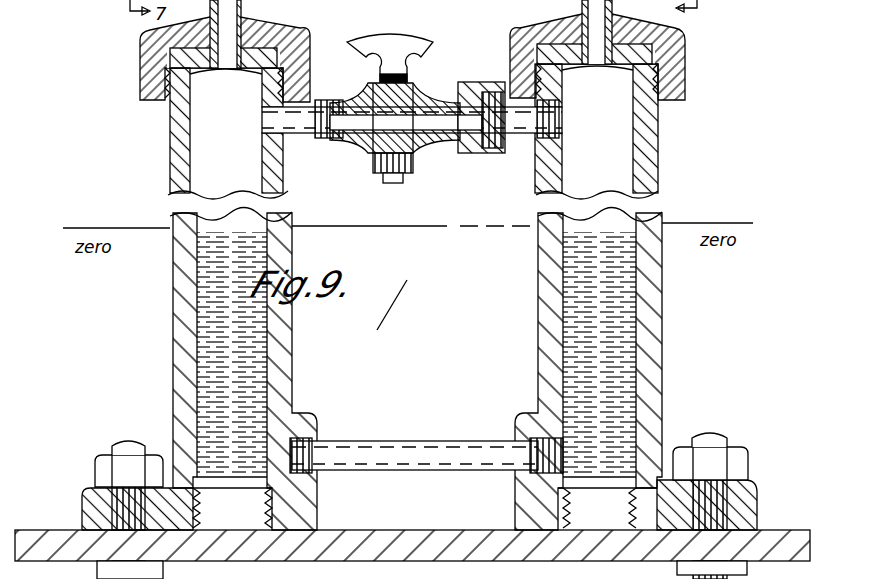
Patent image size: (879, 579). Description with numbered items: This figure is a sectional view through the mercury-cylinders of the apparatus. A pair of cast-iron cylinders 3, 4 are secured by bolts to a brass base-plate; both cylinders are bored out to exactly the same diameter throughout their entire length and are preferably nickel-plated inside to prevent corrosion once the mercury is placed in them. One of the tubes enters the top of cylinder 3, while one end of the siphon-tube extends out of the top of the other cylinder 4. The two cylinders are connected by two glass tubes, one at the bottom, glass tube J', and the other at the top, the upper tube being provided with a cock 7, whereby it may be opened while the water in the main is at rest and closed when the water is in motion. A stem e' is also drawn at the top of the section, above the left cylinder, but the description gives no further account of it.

The cast-iron cylinder 3 is at (199, 368).
The cast-iron cylinder 4 is at (636, 368).
The cock 7 is at (395, 108).
The stem e' is at (169, 34).
The glass tube J' is at (426, 445).